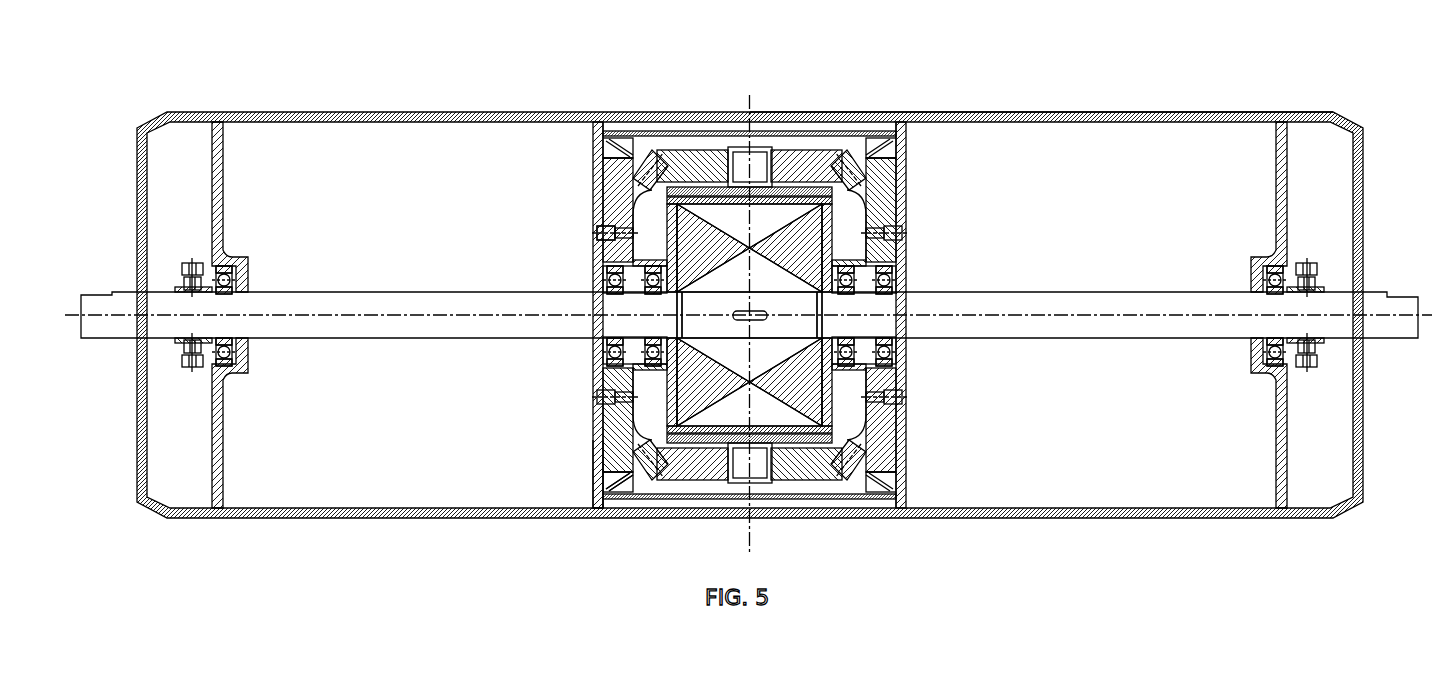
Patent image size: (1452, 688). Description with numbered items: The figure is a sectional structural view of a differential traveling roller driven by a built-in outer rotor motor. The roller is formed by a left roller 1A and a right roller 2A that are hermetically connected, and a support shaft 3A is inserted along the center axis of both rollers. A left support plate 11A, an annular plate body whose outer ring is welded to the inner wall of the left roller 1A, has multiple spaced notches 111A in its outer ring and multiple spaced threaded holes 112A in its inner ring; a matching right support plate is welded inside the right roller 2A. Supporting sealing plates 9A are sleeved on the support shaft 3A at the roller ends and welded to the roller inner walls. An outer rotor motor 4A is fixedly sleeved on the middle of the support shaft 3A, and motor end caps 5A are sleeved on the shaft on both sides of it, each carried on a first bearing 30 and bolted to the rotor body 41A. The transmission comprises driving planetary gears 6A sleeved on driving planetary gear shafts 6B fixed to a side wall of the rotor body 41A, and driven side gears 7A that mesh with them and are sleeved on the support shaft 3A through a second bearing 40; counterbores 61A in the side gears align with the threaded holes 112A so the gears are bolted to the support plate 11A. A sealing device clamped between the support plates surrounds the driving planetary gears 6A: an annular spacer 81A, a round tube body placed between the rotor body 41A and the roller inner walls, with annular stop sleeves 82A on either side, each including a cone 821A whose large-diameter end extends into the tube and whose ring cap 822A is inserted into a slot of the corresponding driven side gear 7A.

The left roller 1A is at (455, 112).
The right roller 2A is at (982, 112).
The support shaft 3A is at (880, 305).
The outer rotor motor 4A is at (832, 259).
The motor end caps 5A is at (665, 243).
The driving planetary gears 6A is at (690, 150).
The driving planetary gear shafts 6B is at (745, 160).
The driven side gears 7A is at (597, 166).
The supporting sealing plates 9A is at (216, 187).
The left support plate 11A is at (600, 203).
The first bearing 30 is at (599, 380).
The second bearing 40 is at (640, 355).
The rotor body 41A is at (833, 194).
The counterbores 61A is at (600, 233).
The annular spacer 81A is at (841, 131).
The annular stop sleeves 82A is at (613, 125).
The notches 111A is at (599, 490).
The threaded holes 112A is at (596, 227).
The cone 821A is at (607, 475).
The ring cap 822A is at (610, 472).